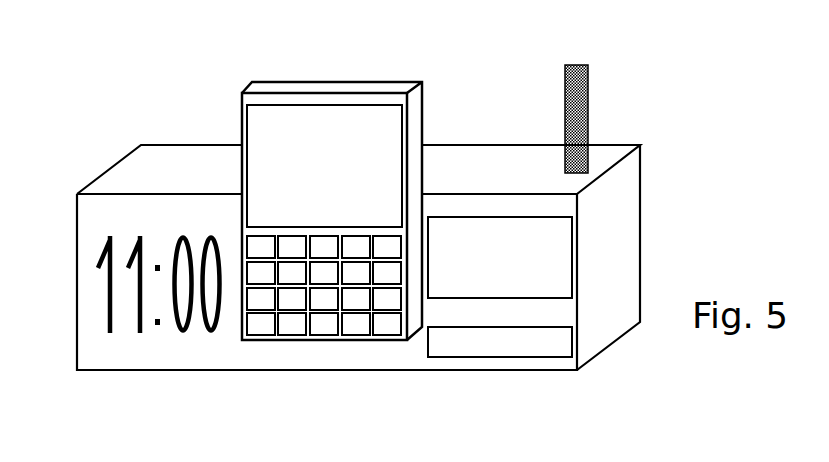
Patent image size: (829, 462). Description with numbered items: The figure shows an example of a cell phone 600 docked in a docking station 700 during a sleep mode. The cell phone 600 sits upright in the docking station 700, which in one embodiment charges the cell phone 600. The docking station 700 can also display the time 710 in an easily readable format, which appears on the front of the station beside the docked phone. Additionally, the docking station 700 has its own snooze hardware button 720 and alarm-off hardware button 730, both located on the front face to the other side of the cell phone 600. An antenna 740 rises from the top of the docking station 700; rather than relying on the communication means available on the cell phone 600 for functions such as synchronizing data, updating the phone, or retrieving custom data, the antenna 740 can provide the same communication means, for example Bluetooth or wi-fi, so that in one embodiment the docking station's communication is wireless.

The cell phone 600 is at (368, 75).
The docking station 700 is at (354, 376).
The time 710 is at (88, 321).
The snooze hardware button 720 is at (554, 238).
The alarm-off hardware button 730 is at (552, 317).
The antenna 740 is at (593, 90).